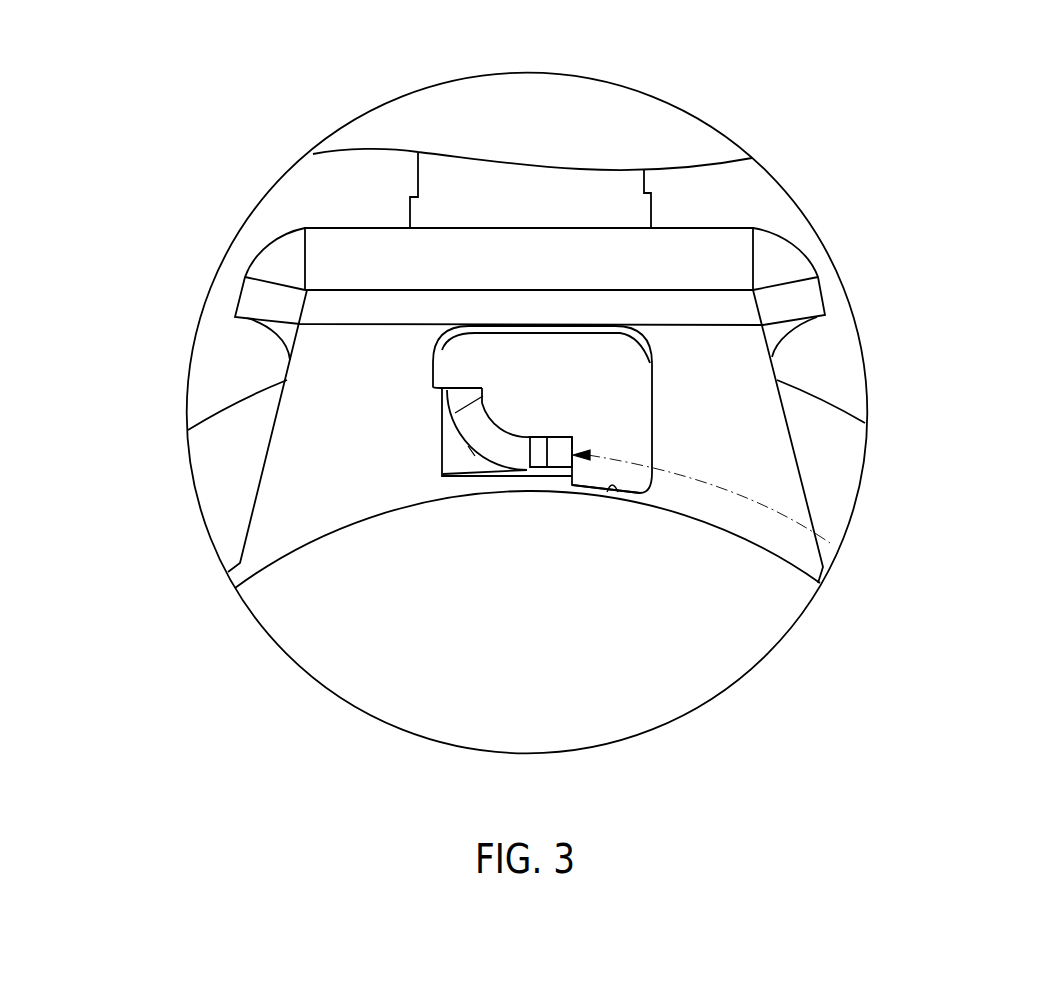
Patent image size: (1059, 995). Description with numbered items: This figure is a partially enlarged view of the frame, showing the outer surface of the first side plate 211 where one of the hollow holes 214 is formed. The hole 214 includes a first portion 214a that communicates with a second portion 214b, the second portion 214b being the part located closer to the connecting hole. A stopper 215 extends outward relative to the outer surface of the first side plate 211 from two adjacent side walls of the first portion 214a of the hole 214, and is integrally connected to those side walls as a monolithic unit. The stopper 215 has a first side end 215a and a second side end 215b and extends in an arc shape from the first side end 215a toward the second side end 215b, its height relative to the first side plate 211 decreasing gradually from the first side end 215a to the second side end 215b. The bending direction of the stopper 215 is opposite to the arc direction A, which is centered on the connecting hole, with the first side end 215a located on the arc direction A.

The first side plate 211 is at (708, 583).
The hole 214 is at (654, 380).
The first portion 214a is at (653, 375).
The second portion 214b is at (618, 490).
The stopper 215 is at (493, 438).
The first side end 215a is at (573, 437).
The second side end 215b is at (463, 388).
The arc direction A is at (783, 510).